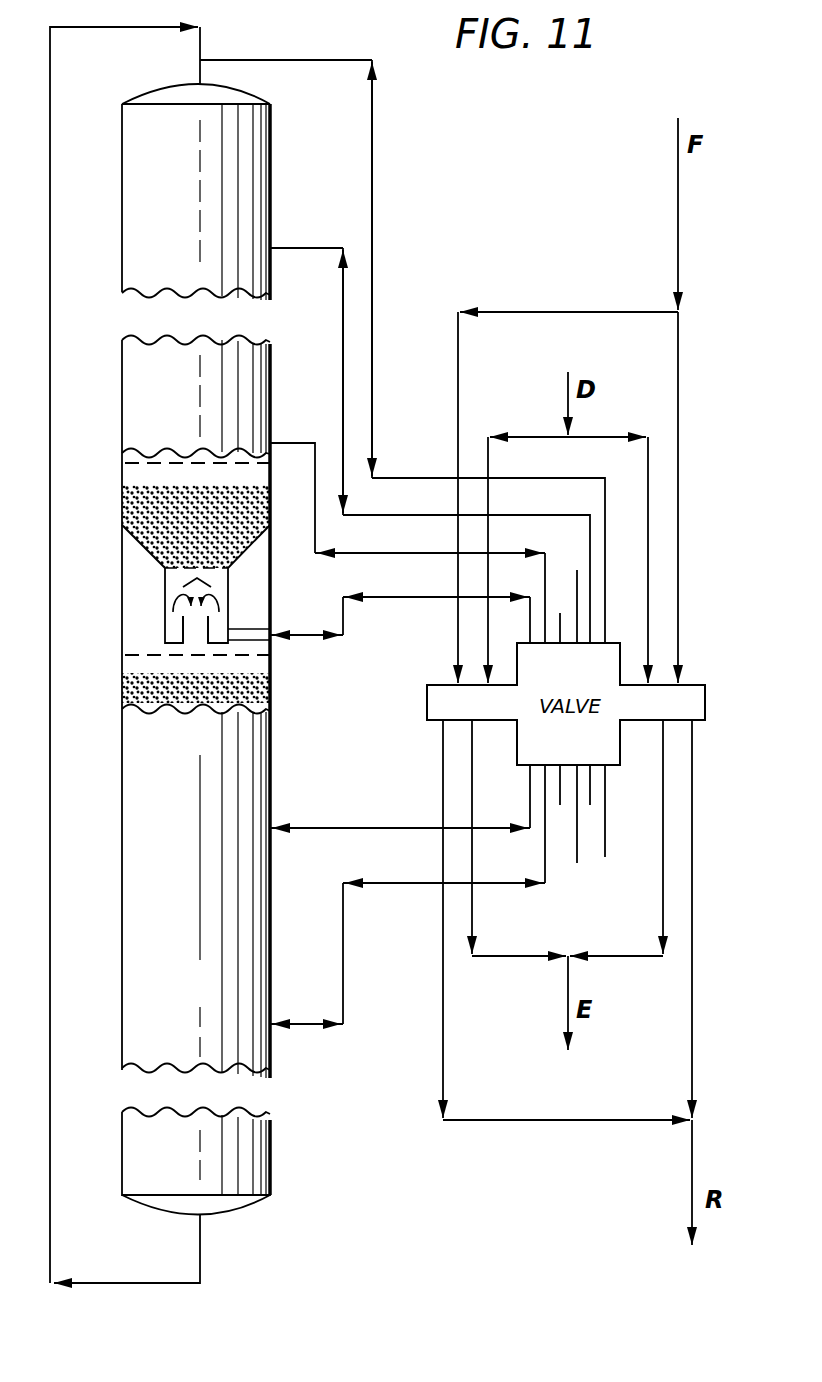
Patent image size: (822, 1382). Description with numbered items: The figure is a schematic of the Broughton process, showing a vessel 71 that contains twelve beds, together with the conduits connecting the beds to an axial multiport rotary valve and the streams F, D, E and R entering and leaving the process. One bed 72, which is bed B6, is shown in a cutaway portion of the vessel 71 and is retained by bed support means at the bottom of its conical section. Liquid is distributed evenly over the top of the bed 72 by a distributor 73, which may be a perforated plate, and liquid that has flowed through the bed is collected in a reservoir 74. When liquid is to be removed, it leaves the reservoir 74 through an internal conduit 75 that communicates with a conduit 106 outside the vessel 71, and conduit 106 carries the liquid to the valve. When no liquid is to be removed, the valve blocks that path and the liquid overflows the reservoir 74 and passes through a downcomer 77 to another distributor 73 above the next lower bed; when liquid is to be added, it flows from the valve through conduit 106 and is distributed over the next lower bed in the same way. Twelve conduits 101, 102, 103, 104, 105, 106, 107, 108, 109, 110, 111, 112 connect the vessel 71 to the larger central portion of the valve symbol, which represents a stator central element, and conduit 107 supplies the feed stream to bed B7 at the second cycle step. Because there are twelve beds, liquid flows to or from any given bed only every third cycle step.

The vessel 71 is at (273, 161).
The bed 72 is at (165, 514).
The distributor 73 is at (148, 464).
The reservoir 74 is at (172, 620).
The internal conduit 75 is at (247, 629).
The downcomer 77 is at (196, 633).
The conduit 101 is at (373, 166).
The conduit 102 is at (291, 247).
The conduit 103 is at (578, 577).
The conduit 104 is at (561, 620).
The conduit 105 is at (291, 443).
The conduit 106 is at (430, 599).
The conduit 107 is at (420, 827).
The conduit 108 is at (299, 1030).
The conduit 109 is at (560, 805).
The conduit 110 is at (577, 863).
The conduit 111 is at (590, 805).
The conduit 112 is at (605, 857).